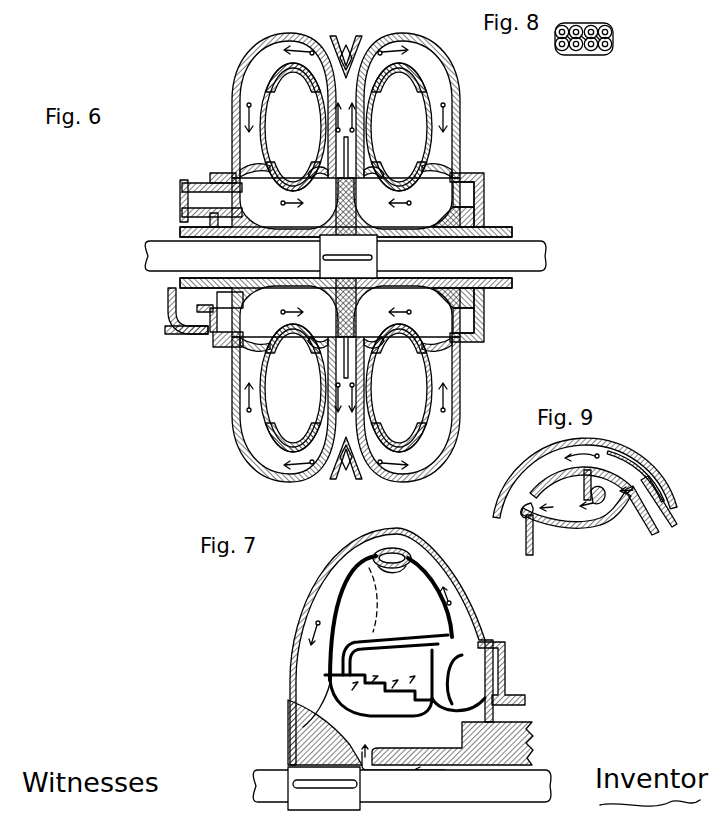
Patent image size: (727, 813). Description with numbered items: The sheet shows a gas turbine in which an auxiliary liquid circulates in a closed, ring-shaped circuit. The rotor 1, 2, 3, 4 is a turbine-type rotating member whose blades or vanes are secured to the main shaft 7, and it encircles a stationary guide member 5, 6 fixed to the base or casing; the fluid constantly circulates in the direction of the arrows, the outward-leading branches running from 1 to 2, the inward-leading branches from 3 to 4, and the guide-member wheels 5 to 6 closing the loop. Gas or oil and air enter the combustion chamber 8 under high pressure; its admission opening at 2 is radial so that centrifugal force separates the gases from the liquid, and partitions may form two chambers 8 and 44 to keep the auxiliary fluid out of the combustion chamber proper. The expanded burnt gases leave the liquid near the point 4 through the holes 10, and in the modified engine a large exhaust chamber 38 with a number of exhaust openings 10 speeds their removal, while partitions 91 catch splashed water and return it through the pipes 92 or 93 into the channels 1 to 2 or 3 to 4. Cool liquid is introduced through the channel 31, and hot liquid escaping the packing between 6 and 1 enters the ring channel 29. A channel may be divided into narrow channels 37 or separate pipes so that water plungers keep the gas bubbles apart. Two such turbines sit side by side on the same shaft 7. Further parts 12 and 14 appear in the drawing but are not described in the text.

In FIG. 6, the rotor 1 is at (345, 257).
In FIG. 7, the rotor 1 is at (464, 636).
In FIG. 6, the rotor 2 is at (360, 62).
In FIG. 7, the rotor 2 is at (408, 562).
In FIG. 9, the rotor 2 is at (648, 505).
In FIG. 6, the rotor 3 is at (277, 66).
In FIG. 7, the rotor 3 is at (375, 558).
In FIG. 9, the rotor 3 is at (585, 496).
In FIG. 6, the rotor 4 is at (346, 153).
In FIG. 7, the rotor 4 is at (314, 706).
In FIG. 6, the guide member 5 is at (238, 176).
In FIG. 7, the guide member 5 is at (369, 733).
In FIG. 6, the guide member 6 is at (345, 188).
In FIG. 7, the guide member 6 is at (461, 679).
In FIG. 6, the main shaft 7 is at (345, 256).
In FIG. 7, the main shaft 7 is at (402, 788).
In FIG. 6, the combustion chamber 8 is at (300, 77).
In FIG. 7, the combustion chamber 8 is at (393, 556).
In FIG. 9, the combustion chamber 8 is at (581, 482).
In FIG. 6, the exhaust openings 10 is at (265, 152).
In FIG. 7, the exhaust openings 10 is at (349, 694).
In FIG. 6, the pipe connection 12 is at (188, 200).
In FIG. 6, the fitting block 14 is at (250, 186).
In FIG. 6, the ring channel 29 is at (458, 257).
In FIG. 6, the channel 31 is at (246, 280).
In FIG. 8, the channels 37 is at (591, 50).
In FIG. 7, the exhaust chamber 38 is at (390, 706).
In FIG. 9, the chamber 44 is at (601, 490).
In FIG. 7, the partitions 91 is at (362, 690).
In FIG. 7, the pipe 92 is at (362, 648).
In FIG. 7, the pipe 93 is at (368, 597).